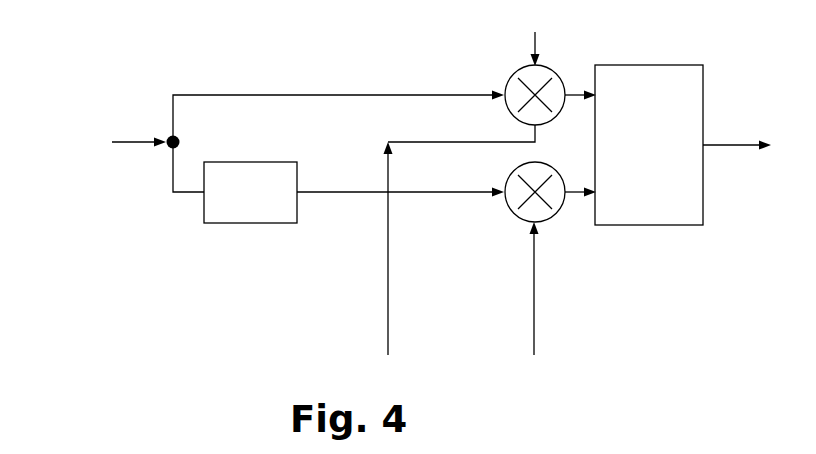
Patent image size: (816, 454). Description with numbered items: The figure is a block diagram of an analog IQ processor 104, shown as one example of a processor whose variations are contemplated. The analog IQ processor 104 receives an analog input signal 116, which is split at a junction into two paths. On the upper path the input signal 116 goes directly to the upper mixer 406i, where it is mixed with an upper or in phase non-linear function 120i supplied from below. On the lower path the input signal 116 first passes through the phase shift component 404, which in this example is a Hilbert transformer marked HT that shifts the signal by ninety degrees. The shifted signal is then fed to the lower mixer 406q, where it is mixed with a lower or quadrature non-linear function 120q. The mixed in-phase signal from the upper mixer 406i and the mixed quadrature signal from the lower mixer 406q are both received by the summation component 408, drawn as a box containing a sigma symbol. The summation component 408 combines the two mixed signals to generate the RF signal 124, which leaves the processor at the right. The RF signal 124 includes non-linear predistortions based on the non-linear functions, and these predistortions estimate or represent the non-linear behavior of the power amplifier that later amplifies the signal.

The analog IQ processor 104 is at (121, 338).
The input signal 116 is at (128, 142).
The phase shift component 404 is at (251, 223).
The upper mixer 406i is at (521, 66).
The lower mixer 406q is at (520, 220).
The in phase non-linear function 120i is at (388, 322).
The quadrature non-linear function 120q is at (534, 322).
The summation component 408 is at (649, 65).
The RF signal 124 is at (710, 145).